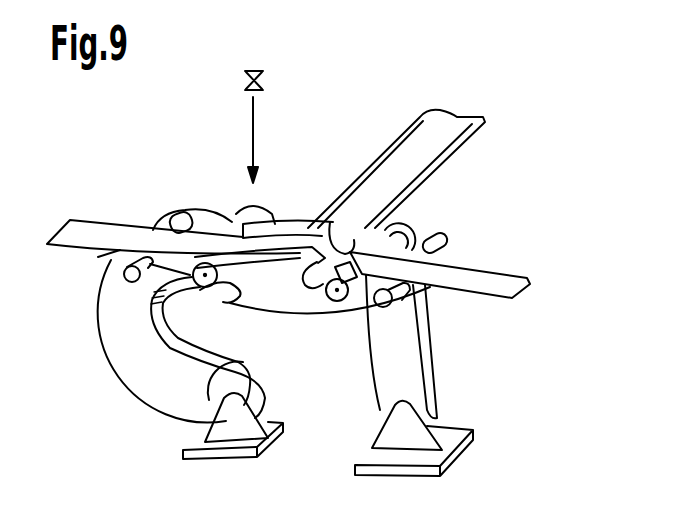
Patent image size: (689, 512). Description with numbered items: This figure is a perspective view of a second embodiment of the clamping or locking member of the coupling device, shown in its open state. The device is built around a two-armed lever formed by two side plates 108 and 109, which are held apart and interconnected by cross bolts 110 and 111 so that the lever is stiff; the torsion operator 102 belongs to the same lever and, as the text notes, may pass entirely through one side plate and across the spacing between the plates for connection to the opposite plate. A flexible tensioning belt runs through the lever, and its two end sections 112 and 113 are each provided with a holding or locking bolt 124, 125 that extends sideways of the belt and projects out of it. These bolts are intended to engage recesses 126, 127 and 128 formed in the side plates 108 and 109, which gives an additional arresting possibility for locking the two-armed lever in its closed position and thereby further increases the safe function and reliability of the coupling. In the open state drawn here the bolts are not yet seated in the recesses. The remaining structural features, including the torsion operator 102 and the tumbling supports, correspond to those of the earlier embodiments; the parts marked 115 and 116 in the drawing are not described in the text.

The torsion operator 102 is at (407, 132).
The side plate 108 is at (273, 303).
The side plate 109 is at (210, 222).
The cross bolt 110 is at (198, 283).
The cross bolt 111 is at (343, 298).
The end section of the tensioning belt 112 is at (70, 220).
The end section of the tensioning belt 113 is at (512, 268).
The ring 115 is at (105, 297).
The support arm 116 is at (405, 320).
The holding or locking bolt 124 is at (440, 237).
The holding or locking bolt 125 is at (170, 218).
The recess 126 is at (223, 302).
The recess 127 is at (323, 300).
The recess 128 is at (343, 215).